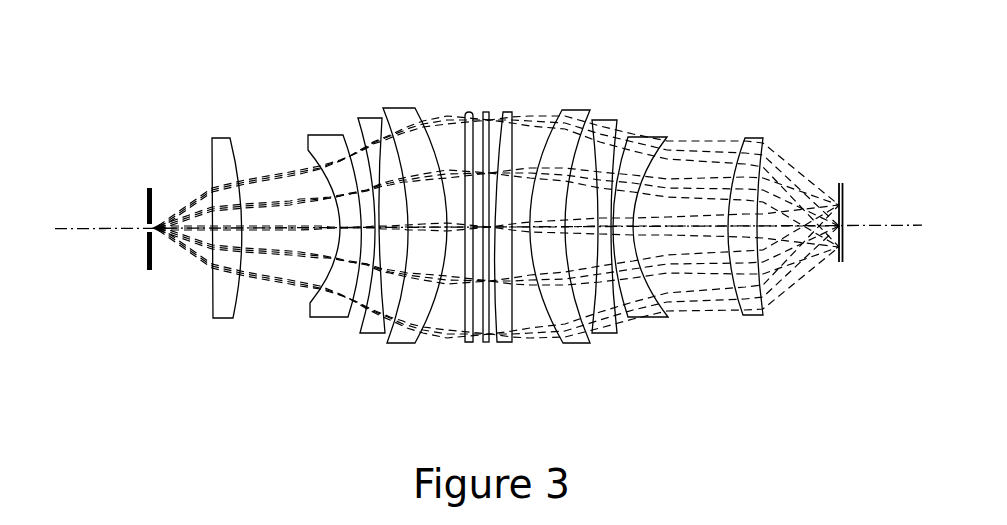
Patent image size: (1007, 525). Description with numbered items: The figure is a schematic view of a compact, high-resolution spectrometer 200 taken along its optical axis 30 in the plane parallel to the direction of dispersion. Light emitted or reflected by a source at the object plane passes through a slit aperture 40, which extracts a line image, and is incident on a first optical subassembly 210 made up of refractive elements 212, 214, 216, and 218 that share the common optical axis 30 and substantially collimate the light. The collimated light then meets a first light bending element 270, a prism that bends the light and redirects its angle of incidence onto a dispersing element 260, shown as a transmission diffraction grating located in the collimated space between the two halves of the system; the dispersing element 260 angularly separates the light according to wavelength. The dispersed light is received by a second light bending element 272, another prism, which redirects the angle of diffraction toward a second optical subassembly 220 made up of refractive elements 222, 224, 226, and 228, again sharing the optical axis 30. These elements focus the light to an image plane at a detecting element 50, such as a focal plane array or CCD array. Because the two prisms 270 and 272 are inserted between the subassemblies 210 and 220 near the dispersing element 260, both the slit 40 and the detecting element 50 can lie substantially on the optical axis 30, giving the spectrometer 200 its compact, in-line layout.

The spectrometer 200 is at (121, 65).
The optical axis 30 is at (84, 229).
The slit aperture 40 is at (146, 204).
The detecting element 50 is at (845, 190).
The first optical subassembly 210 is at (436, 110).
The refractive element 212 is at (223, 319).
The refractive element 214 is at (318, 319).
The refractive element 216 is at (373, 335).
The refractive element 218 is at (402, 345).
The first light bending element 270 is at (466, 110).
The dispersing element 260 is at (492, 343).
The second light bending element 272 is at (509, 110).
The second optical subassembly 220 is at (763, 107).
The refractive element 222 is at (573, 345).
The refractive element 224 is at (608, 335).
The refractive element 226 is at (648, 318).
The refractive element 228 is at (752, 317).